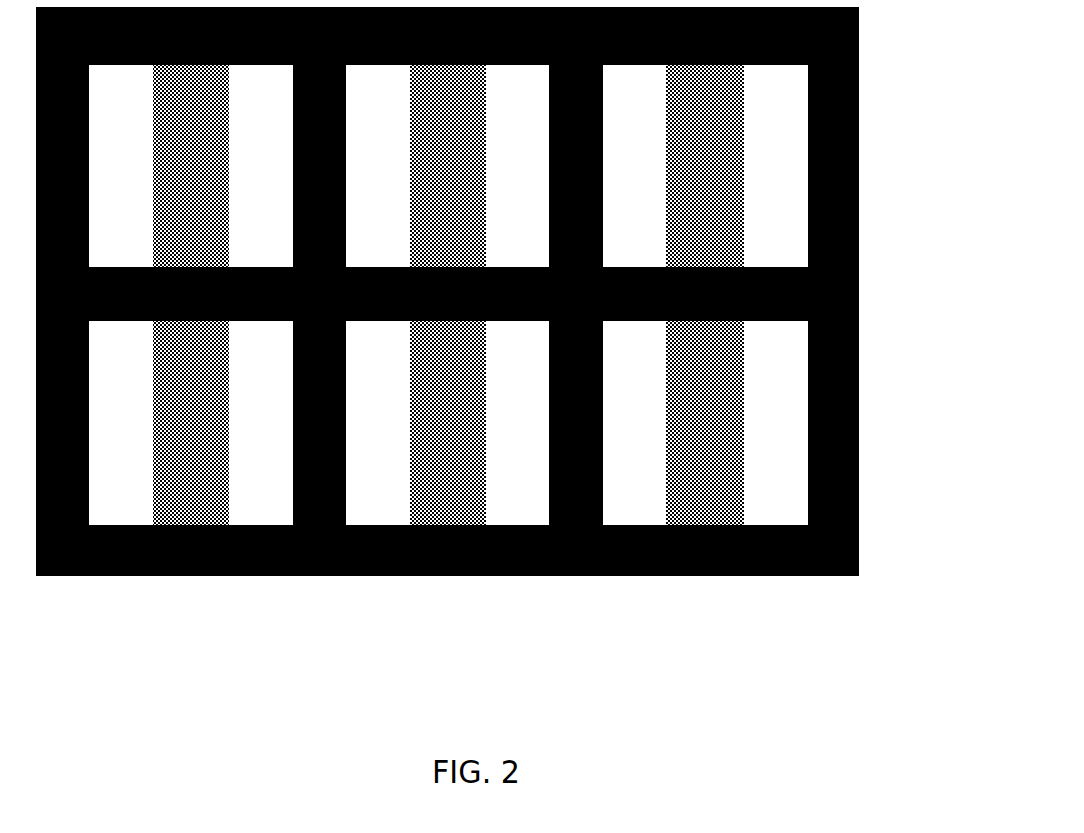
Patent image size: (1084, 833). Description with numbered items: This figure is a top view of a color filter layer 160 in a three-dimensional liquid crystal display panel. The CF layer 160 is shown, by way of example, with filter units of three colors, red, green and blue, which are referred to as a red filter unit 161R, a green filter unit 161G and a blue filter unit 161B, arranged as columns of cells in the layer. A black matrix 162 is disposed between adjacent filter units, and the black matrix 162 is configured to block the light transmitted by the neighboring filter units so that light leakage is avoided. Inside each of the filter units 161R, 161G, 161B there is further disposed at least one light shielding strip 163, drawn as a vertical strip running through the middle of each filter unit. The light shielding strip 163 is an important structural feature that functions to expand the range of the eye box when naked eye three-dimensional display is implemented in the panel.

The color filter layer 160 is at (486, 331).
The blue filter unit 161B is at (191, 359).
The green filter unit 161G is at (447, 359).
The red filter unit 161R is at (705, 360).
The black matrix 162 is at (720, 305).
The light shielding strip 163 is at (545, 295).